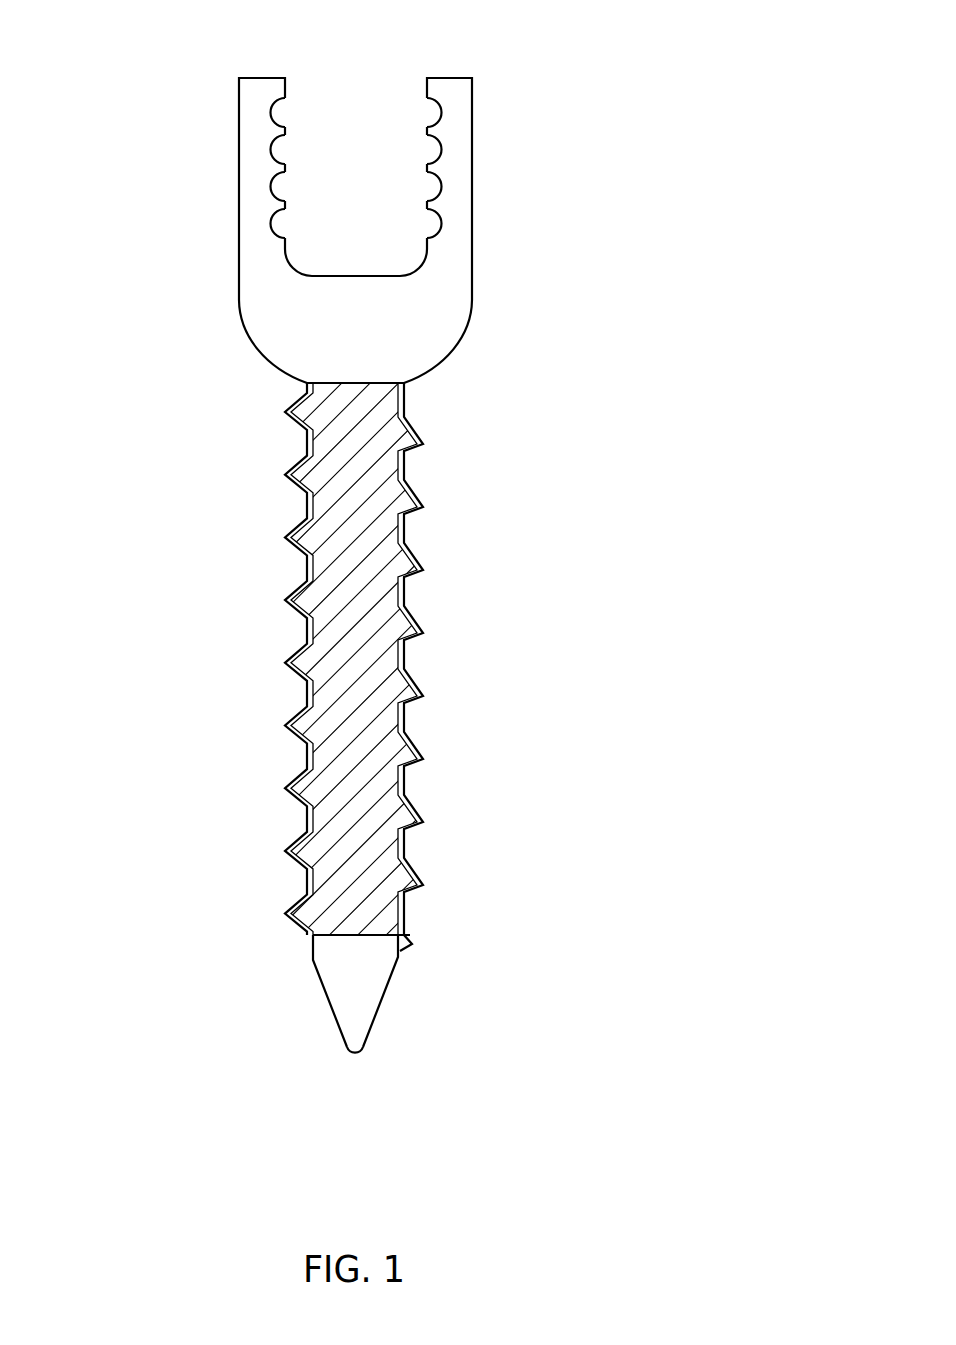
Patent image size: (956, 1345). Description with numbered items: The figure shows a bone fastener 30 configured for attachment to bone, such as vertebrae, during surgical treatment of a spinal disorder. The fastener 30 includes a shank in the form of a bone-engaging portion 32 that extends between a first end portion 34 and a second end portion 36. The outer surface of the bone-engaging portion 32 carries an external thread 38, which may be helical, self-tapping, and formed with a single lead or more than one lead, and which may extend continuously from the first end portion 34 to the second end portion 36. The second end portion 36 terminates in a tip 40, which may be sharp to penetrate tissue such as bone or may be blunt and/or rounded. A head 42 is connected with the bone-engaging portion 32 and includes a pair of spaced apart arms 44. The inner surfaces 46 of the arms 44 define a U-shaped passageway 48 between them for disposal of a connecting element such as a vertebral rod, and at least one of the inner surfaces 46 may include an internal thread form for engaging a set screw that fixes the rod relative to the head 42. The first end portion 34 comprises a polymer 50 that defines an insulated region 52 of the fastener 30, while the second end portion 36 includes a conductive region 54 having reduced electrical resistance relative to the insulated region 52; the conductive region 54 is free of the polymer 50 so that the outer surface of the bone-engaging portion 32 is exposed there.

The fastener 30 is at (655, 573).
The bone-engaging portion 32 is at (227, 755).
The first end portion 34 is at (352, 667).
The second end portion 36 is at (358, 1033).
The external thread 38 is at (412, 868).
The tip 40 is at (367, 1050).
The head 42 is at (125, 324).
The arms 44 is at (253, 208).
The inner surfaces 46 is at (273, 122).
The U-shaped passageway 48 is at (395, 245).
The polymer 50 is at (383, 720).
The insulated region 52 is at (233, 567).
The conductive region 54 is at (435, 1013).